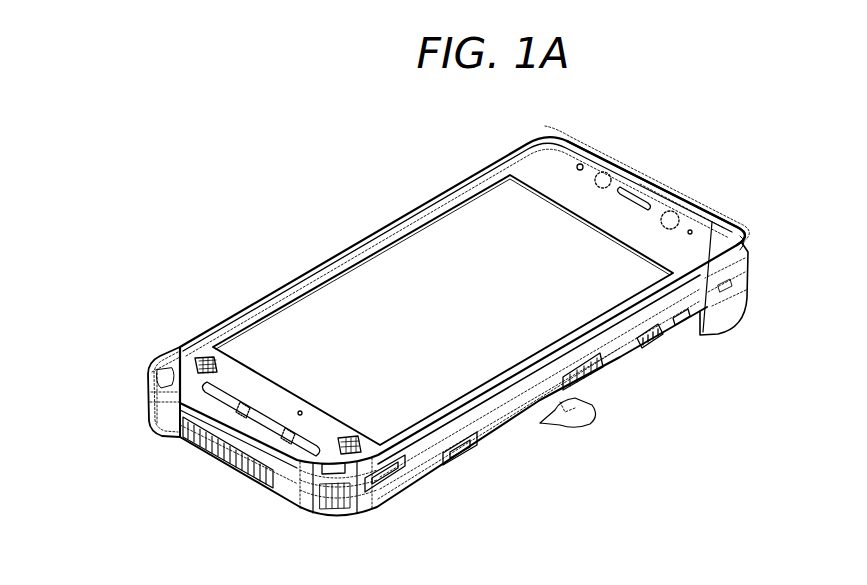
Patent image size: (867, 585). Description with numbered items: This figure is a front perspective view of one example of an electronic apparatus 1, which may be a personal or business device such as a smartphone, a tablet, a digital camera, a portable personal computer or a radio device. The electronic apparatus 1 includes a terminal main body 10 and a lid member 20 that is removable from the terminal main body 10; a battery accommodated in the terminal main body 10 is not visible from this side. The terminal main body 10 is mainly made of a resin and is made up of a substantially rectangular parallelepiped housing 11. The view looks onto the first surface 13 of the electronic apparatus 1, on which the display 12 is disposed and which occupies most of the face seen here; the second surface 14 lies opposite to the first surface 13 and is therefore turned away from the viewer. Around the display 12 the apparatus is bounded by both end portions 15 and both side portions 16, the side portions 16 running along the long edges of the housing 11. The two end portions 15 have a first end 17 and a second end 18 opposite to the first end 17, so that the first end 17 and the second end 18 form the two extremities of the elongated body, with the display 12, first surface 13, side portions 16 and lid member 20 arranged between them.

The electronic apparatus 1 is at (248, 282).
The terminal main body 10 is at (607, 203).
The housing 11 is at (623, 347).
The display 12 is at (383, 303).
The first surface 13 is at (462, 200).
The second surface 14 is at (703, 327).
The end portions 15 is at (445, 323).
The side portions 16 is at (520, 405).
The first end 17 is at (687, 202).
The second end 18 is at (167, 417).
The lid member 20 is at (671, 306).